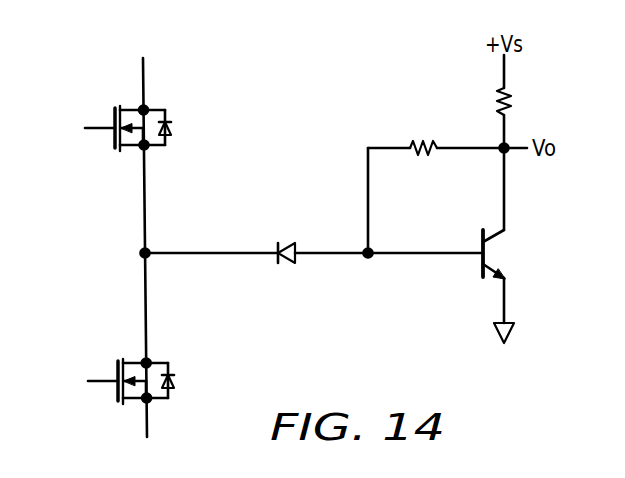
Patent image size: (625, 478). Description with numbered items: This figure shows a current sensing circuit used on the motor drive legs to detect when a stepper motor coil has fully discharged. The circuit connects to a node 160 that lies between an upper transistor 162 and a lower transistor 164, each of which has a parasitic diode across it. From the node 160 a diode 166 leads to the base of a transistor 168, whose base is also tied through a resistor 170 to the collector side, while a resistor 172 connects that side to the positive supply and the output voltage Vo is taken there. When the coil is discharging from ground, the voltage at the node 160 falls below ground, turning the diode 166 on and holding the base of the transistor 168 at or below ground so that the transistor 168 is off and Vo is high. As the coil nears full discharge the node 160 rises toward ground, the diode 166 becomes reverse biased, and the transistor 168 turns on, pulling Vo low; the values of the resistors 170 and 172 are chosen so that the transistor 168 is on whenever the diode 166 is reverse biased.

The node 160 is at (144, 253).
The upper transistor 162 is at (104, 98).
The lower transistor 164 is at (105, 351).
The diode 166 is at (281, 243).
The transistor 168 is at (516, 244).
The resistor 170 is at (428, 143).
The resistor 172 is at (511, 101).